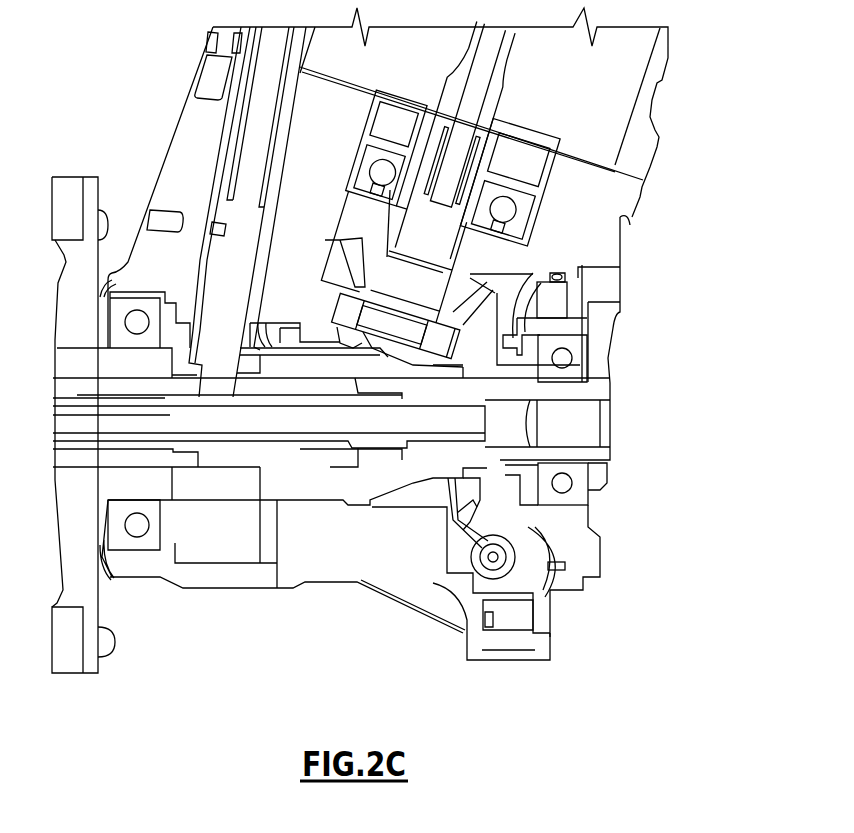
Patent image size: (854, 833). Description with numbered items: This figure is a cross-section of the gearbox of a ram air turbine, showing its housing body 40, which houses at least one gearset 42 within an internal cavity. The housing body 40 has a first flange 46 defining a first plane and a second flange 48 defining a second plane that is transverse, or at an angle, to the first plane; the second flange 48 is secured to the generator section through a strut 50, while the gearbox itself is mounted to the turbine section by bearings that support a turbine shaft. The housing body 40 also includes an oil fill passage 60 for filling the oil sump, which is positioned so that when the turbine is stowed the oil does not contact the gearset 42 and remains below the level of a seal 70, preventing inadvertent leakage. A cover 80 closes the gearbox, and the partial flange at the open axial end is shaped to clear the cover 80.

The housing body 40 is at (218, 590).
The gearset 42 is at (490, 527).
The first flange 46 is at (133, 572).
The second flange 48 is at (642, 197).
The strut 50 is at (660, 83).
The oil fill passage 60 is at (497, 558).
The seal 70 is at (517, 492).
The cover 80 is at (590, 557).